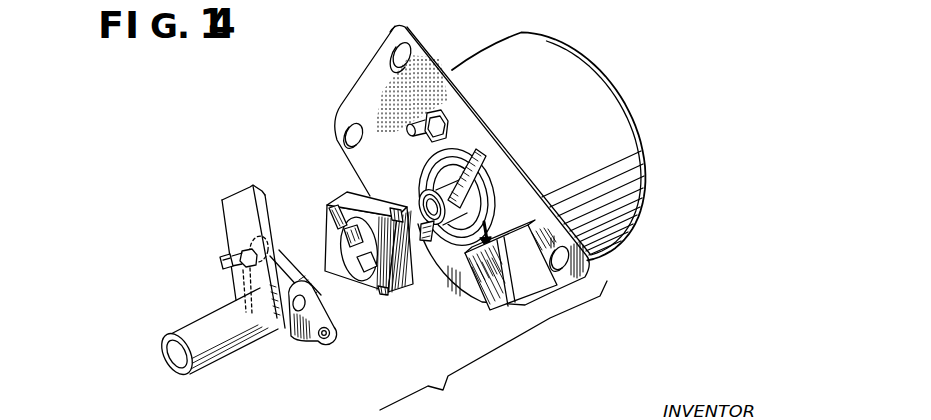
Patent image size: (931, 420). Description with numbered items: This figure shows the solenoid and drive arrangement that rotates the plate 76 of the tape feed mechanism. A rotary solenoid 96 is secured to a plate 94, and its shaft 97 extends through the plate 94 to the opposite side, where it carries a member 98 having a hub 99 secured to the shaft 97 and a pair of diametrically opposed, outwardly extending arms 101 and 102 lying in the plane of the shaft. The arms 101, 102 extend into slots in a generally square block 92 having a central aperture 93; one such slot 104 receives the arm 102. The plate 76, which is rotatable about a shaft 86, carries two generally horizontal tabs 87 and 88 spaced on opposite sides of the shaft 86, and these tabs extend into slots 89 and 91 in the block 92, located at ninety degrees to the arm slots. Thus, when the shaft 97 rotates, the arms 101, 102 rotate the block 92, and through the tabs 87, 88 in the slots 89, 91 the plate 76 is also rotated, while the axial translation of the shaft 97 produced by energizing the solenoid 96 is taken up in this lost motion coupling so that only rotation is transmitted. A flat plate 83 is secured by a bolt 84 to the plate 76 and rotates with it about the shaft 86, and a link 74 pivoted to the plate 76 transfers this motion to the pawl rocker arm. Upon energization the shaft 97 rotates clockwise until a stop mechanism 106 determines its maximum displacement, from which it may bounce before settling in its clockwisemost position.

The link 74 is at (331, 324).
The plate 76 is at (267, 289).
The flat plate 83 is at (221, 223).
The bolt 84 is at (239, 250).
The shaft 86 is at (209, 343).
The tab 87 is at (310, 343).
The tab 88 is at (224, 262).
The slot 89 is at (373, 251).
The slot 91 is at (333, 222).
The block 92 is at (414, 282).
The central aperture 93 is at (350, 244).
The plate 94 is at (430, 52).
The rotary solenoid 96 is at (603, 103).
The shaft 97 is at (418, 193).
The member 98 is at (455, 206).
The hub 99 is at (433, 241).
The arm 101 is at (418, 252).
The arm 102 is at (488, 154).
The slot 104 is at (405, 210).
The stop mechanism 106 is at (488, 221).